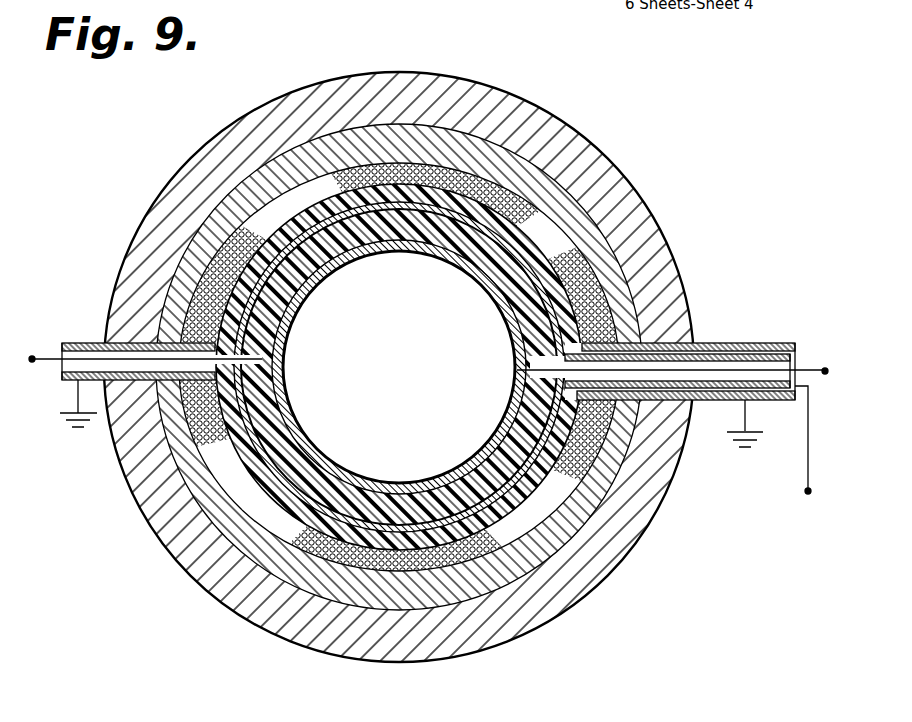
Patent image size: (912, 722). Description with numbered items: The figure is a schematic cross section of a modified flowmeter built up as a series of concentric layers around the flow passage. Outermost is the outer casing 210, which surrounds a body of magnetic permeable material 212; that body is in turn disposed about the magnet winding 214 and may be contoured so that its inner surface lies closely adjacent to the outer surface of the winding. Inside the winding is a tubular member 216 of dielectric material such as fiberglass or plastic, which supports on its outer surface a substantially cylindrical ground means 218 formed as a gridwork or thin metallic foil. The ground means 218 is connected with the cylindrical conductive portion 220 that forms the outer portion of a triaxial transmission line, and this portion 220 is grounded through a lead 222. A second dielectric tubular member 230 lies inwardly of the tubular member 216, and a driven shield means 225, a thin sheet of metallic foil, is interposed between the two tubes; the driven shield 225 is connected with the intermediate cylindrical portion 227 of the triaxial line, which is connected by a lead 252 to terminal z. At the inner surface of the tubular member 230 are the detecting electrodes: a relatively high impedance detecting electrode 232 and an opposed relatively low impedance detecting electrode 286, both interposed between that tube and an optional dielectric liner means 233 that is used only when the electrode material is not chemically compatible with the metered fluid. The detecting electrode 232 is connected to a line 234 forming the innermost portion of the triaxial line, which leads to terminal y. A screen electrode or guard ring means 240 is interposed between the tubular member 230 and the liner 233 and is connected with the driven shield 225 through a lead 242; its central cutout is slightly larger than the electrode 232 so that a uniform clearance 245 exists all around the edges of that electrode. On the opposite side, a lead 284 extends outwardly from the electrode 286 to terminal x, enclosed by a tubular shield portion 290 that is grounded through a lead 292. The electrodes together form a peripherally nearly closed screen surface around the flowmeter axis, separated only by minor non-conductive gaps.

The outer casing 210 is at (642, 197).
The body of magnetic permeable material 212 is at (354, 137).
The magnet winding 214 is at (463, 173).
The tubular member 216 is at (251, 459).
The ground means 218 is at (266, 492).
The cylindrical conductive portion 220 is at (722, 343).
The lead 222 is at (748, 416).
The driven shield means 225 is at (484, 538).
The intermediate cylindrical portion 227 is at (716, 400).
The tubular member 230 is at (302, 468).
The high impedance detecting electrode 232 is at (514, 337).
The liner means 233 is at (409, 481).
The line 234 is at (791, 360).
The guard ring means 240 is at (512, 236).
The lead 242 is at (543, 292).
The clearance 245 is at (517, 412).
The lead 252 is at (807, 445).
The lead 284 is at (66, 357).
The low impedance detecting electrode 286 is at (292, 321).
The tubular shield portion 290 is at (90, 343).
The lead 292 is at (76, 400).